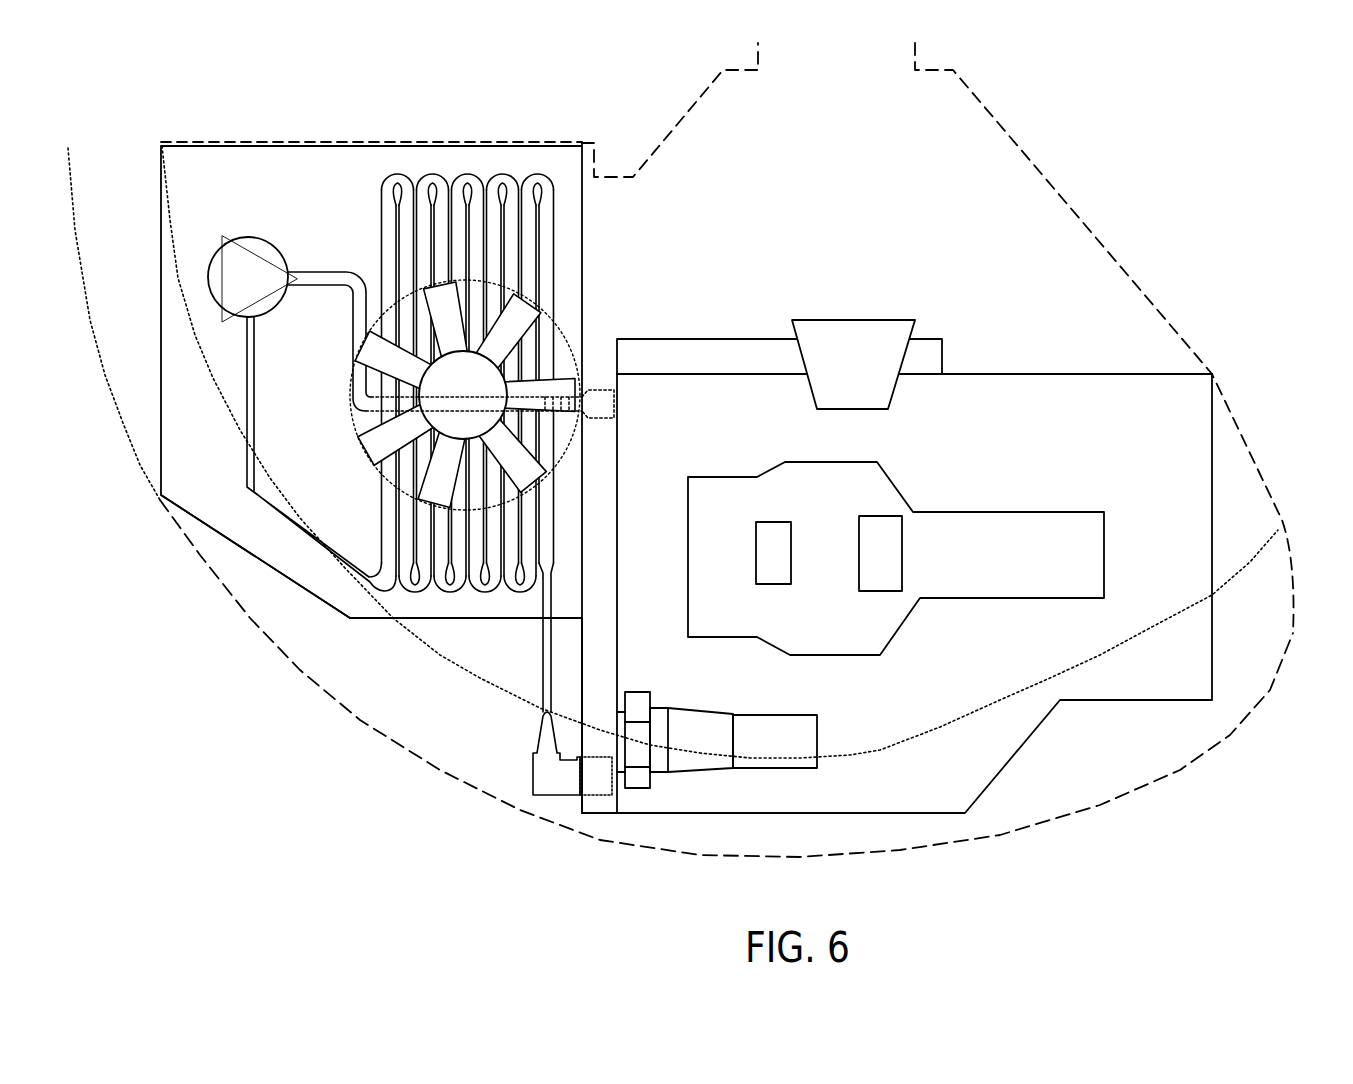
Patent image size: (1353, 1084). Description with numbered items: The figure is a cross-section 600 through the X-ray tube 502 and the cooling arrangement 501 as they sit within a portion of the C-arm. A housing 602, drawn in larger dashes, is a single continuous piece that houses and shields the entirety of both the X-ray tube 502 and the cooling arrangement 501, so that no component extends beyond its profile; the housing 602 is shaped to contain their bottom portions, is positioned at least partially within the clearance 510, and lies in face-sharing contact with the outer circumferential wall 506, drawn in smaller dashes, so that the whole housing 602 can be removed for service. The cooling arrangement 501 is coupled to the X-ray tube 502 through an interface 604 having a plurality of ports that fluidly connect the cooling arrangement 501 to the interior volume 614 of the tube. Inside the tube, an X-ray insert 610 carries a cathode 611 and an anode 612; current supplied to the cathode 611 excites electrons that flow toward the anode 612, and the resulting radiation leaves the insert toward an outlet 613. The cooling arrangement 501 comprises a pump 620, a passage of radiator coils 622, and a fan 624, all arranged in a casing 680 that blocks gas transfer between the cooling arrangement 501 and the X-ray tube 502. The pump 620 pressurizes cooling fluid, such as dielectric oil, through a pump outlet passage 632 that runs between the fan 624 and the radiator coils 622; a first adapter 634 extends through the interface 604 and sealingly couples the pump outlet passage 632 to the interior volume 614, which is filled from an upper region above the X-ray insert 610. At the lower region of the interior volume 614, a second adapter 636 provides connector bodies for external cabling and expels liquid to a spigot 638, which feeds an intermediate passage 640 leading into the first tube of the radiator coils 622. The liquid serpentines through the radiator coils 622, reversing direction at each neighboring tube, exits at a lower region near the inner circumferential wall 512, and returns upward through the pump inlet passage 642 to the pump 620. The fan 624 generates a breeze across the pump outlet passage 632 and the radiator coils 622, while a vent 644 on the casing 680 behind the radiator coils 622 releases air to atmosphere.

The cross-section 600 is at (1280, 83).
The cooling arrangement 501 is at (207, 158).
The X-ray tube 502 is at (1118, 373).
The outer circumferential wall 506 is at (90, 322).
The clearance 510 is at (1120, 750).
The inner circumferential wall 512 is at (1278, 530).
The housing 602 is at (685, 122).
The interface 604 is at (598, 814).
The X-ray insert 610 is at (1000, 507).
The cathode 611 is at (775, 522).
The anode 612 is at (875, 516).
The outlet 613 is at (890, 318).
The interior volume 614 is at (1033, 650).
The pump 620 is at (236, 241).
The radiator coils 622 is at (385, 189).
The fan 624 is at (363, 445).
The pump outlet passage 632 is at (343, 288).
The first adapter 634 is at (600, 385).
The second adapter 636 is at (770, 715).
The spigot 638 is at (540, 718).
The intermediate passage 640 is at (545, 630).
The pump inlet passage 642 is at (245, 487).
The vent 644 is at (353, 409).
The casing 680 is at (230, 543).